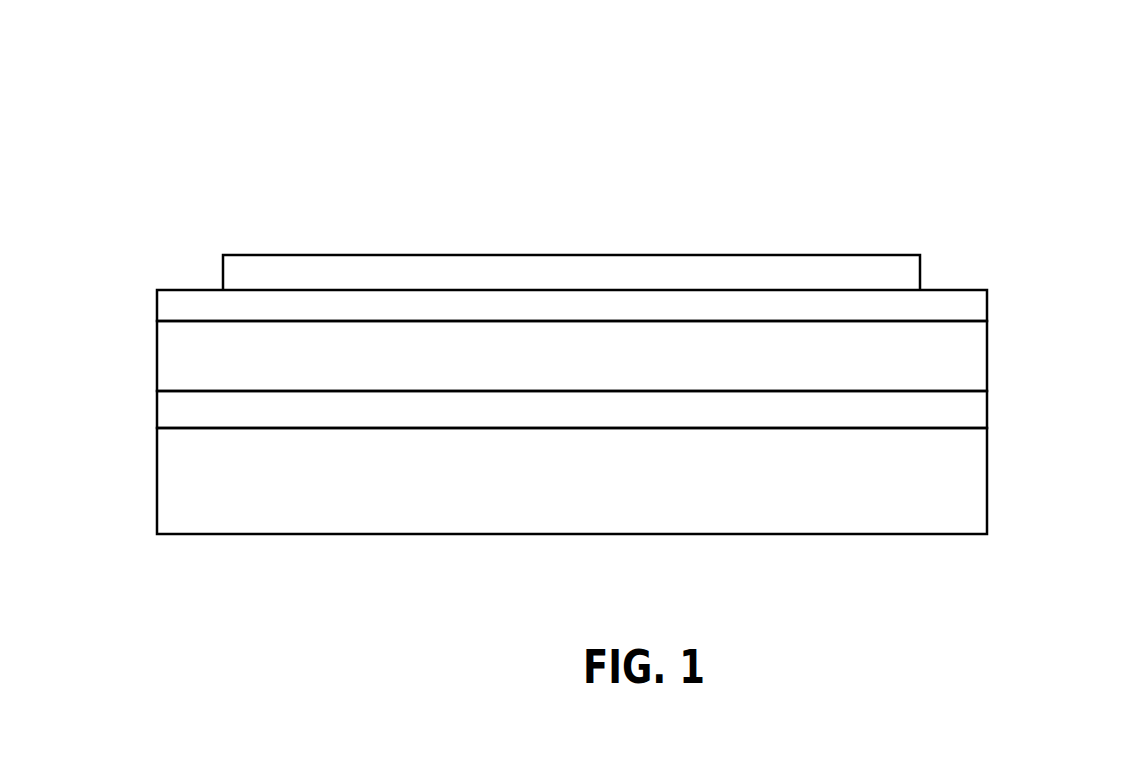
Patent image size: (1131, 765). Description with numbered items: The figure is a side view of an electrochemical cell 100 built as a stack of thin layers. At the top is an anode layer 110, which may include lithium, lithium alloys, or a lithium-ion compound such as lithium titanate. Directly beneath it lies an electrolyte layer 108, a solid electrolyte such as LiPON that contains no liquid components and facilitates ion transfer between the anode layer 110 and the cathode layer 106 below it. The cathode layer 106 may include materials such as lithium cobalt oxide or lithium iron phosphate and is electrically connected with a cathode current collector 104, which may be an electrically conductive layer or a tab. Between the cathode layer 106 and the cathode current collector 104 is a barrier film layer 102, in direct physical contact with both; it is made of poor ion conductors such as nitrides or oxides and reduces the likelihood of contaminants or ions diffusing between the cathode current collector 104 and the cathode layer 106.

The electrochemical cell 100 is at (848, 113).
The barrier film layer 102 is at (960, 411).
The cathode current collector 104 is at (960, 479).
The cathode layer 106 is at (960, 358).
The electrolyte layer 108 is at (945, 307).
The anode layer 110 is at (538, 270).